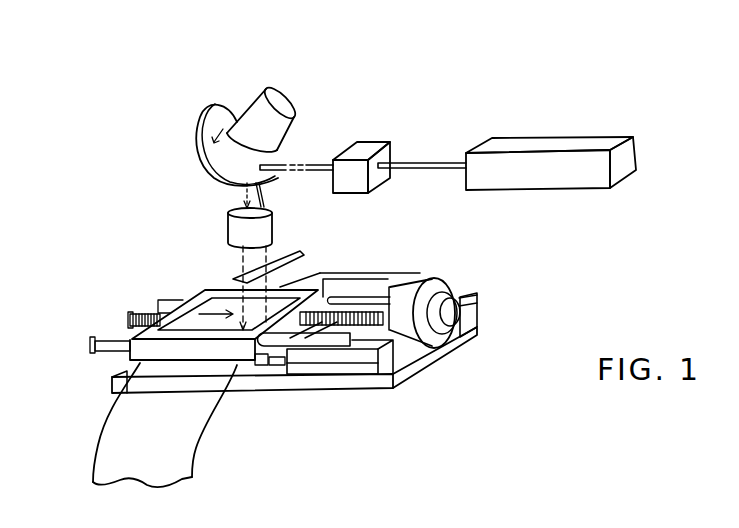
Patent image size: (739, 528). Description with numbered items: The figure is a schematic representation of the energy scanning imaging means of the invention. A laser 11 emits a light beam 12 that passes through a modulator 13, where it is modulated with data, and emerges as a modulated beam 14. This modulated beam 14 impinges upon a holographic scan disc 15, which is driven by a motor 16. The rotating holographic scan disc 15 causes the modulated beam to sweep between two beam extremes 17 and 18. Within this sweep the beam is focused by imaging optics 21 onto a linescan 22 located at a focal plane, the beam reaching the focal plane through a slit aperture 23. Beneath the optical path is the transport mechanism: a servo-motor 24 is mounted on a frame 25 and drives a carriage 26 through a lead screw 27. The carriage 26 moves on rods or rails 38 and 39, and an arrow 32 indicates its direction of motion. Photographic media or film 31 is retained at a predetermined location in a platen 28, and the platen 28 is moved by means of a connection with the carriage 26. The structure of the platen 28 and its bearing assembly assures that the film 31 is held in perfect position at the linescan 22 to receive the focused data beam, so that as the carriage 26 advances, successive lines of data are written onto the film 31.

The laser 11 is at (586, 143).
The light beam 12 is at (426, 162).
The modulator 13 is at (366, 147).
The modulated beam 14 is at (298, 163).
The holographic scan disc 15 is at (224, 108).
The motor 16 is at (282, 100).
The beam extreme 17 is at (243, 200).
The beam extreme 18 is at (259, 197).
The imaging optics 21 is at (230, 222).
The linescan 22 is at (232, 292).
The slit aperture 23 is at (280, 254).
The servo-motor 24 is at (478, 297).
The frame 25 is at (478, 326).
The carriage 26 is at (330, 273).
The lead screw 27 is at (393, 273).
The platen 28 is at (265, 371).
The photographic media or film 31 is at (111, 428).
The arrow 32 is at (203, 298).
The rod or rail 38 is at (368, 283).
The rod or rail 39 is at (348, 342).